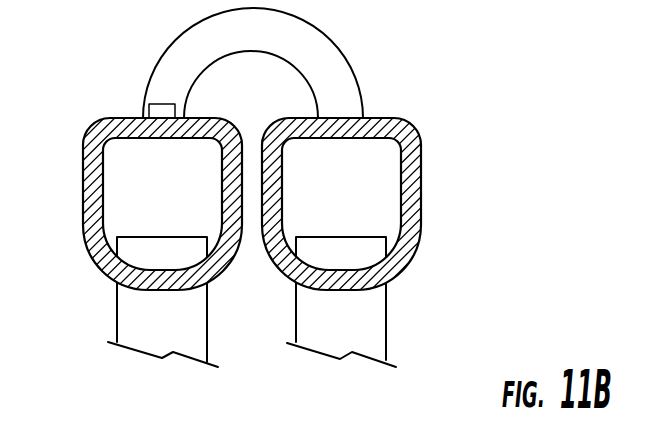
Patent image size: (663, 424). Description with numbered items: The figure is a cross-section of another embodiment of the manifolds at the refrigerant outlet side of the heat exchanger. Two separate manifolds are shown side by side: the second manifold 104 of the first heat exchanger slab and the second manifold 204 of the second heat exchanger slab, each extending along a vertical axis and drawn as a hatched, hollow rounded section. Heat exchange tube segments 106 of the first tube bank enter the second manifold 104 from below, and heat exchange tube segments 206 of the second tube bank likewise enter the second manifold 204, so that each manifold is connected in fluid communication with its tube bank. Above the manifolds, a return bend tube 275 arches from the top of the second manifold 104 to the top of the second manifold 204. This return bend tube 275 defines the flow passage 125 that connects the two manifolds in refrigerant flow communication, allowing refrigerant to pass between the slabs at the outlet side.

The second manifold 104 is at (105, 121).
The heat exchange tube segments 106 is at (117, 313).
The flow passage 125 is at (156, 108).
The second manifold 204 is at (410, 132).
The heat exchange tube segments 206 is at (386, 330).
The return bend tube 275 is at (352, 74).